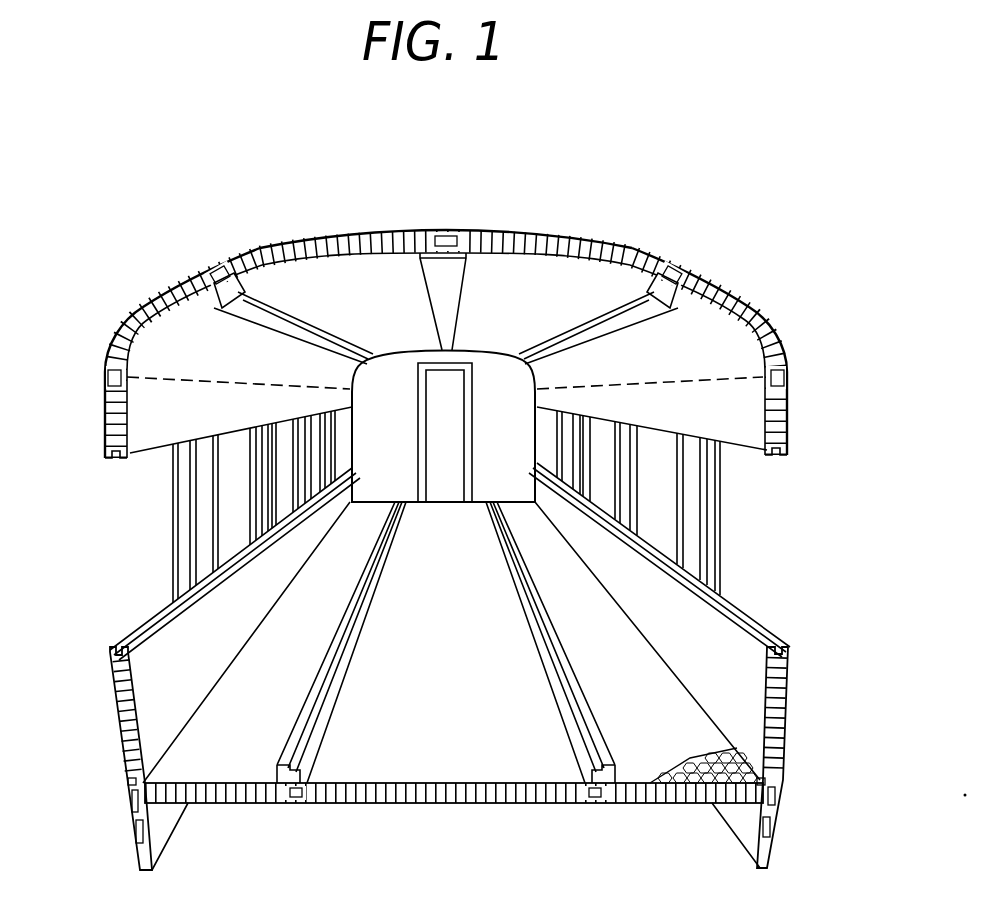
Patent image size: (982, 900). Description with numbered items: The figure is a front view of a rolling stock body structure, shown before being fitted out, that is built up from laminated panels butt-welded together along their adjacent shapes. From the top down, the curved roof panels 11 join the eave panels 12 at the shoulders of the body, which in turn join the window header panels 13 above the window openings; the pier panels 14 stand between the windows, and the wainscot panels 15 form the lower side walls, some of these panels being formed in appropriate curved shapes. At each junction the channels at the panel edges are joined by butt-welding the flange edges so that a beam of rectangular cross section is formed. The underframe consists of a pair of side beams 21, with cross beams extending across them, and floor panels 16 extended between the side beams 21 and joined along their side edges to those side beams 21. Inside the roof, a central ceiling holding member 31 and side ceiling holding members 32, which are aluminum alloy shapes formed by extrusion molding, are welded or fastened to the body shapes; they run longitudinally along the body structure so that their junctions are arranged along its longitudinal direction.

The roof panel 11 is at (312, 237).
The eave panel 12 is at (138, 312).
The window header panel 13 is at (100, 412).
The pier panel 14 is at (709, 543).
The wainscot panel 15 is at (788, 733).
The floor panel 16 is at (428, 806).
The side beam 21 is at (776, 812).
The central ceiling holding member 31 is at (452, 257).
The side ceiling holding member 32 is at (660, 290).